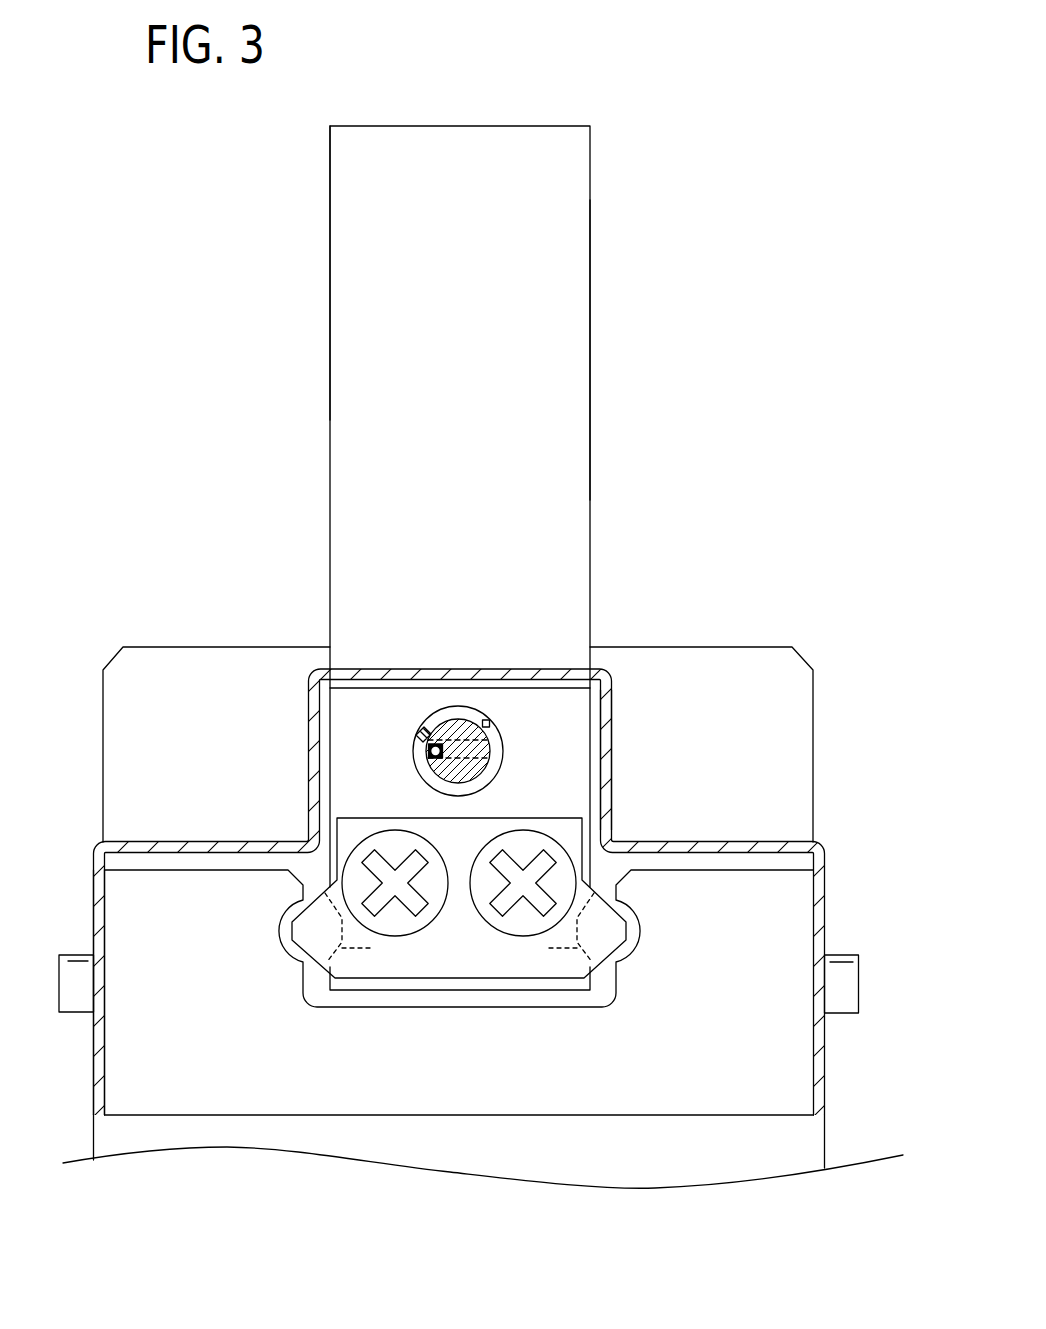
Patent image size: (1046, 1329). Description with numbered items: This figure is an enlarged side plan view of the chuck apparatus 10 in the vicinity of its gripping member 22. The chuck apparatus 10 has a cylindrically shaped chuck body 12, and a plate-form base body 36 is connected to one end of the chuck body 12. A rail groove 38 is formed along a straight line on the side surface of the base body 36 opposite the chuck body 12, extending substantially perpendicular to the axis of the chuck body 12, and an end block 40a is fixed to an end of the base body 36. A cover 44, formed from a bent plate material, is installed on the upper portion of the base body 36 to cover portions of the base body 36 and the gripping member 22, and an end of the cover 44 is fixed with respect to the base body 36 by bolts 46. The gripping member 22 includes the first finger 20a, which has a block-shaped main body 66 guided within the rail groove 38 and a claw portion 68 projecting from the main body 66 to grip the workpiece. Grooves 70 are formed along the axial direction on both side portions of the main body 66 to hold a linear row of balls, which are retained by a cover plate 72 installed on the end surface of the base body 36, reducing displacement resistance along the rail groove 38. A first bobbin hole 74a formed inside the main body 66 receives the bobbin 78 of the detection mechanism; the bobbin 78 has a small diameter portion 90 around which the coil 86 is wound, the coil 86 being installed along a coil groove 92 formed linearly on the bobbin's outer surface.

The chuck apparatus 10 is at (742, 105).
The gripping member 22 is at (554, 106).
The first finger 20a is at (327, 214).
The claw portion 68 is at (592, 330).
The end block 40a is at (677, 668).
The cover 44 is at (452, 668).
The main body 66 is at (565, 757).
The base body 36 is at (142, 1061).
The first bobbin hole 74a is at (490, 733).
The bobbin 78 is at (491, 781).
The small diameter portion 90 is at (456, 771).
The coil groove 92 is at (428, 752).
The coil 86 is at (432, 734).
The groove 70 is at (459, 901).
The cover plate 72 is at (452, 965).
The rail groove 38 is at (372, 1010).
The bolt 46 is at (73, 985).
The chuck body 12 is at (829, 1123).